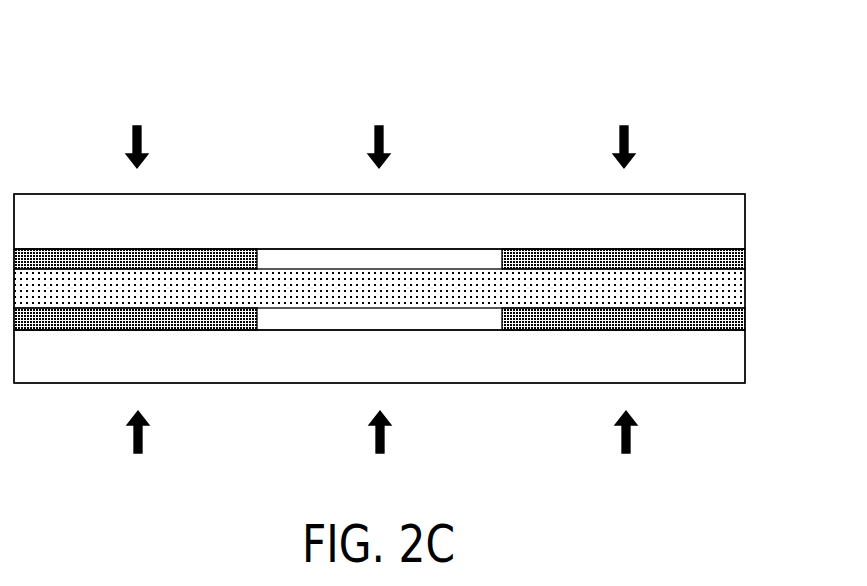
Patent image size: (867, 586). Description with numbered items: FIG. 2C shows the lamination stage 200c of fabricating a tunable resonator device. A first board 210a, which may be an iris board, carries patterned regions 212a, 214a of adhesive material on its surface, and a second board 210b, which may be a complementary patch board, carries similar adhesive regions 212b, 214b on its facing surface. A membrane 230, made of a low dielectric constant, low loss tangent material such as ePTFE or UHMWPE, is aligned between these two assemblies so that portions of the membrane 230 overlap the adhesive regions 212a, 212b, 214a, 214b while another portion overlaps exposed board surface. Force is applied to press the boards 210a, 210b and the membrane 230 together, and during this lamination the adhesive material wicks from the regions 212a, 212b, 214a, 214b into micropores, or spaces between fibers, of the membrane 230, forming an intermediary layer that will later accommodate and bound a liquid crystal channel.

The lamination stage 200c is at (92, 68).
The board 210a is at (710, 366).
The board 210b is at (710, 232).
The region of adhesive material 212a is at (123, 327).
The region of adhesive material 212b is at (125, 255).
The region of adhesive material 214a is at (570, 327).
The region of adhesive material 214b is at (571, 255).
The membrane 230 is at (398, 298).